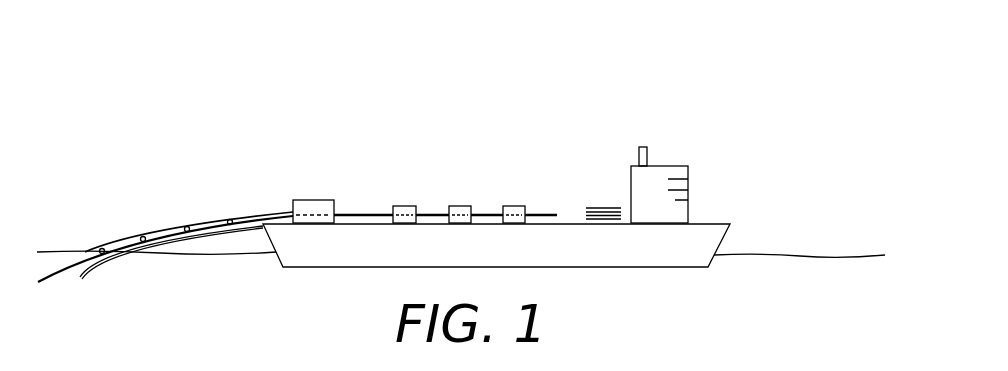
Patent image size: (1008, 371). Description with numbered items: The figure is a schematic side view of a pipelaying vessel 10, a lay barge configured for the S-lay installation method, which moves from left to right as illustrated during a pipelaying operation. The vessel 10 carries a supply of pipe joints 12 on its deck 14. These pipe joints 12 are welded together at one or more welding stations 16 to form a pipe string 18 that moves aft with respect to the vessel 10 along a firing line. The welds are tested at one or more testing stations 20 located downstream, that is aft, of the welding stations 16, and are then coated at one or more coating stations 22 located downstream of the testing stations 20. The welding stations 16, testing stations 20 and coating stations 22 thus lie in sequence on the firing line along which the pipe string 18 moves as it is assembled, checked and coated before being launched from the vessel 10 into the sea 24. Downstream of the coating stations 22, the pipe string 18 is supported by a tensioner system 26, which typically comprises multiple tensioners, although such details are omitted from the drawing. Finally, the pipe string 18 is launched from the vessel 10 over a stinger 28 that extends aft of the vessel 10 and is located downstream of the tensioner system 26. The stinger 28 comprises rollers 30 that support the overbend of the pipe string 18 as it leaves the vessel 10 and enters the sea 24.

The pipelaying vessel 10 is at (461, 167).
The pipe joints 12 is at (602, 206).
The deck 14 is at (567, 222).
The welding stations 16 is at (515, 206).
The pipe string 18 is at (355, 214).
The testing stations 20 is at (459, 206).
The coating stations 22 is at (404, 206).
The sea 24 is at (793, 255).
The tensioner system 26 is at (313, 200).
The stinger 28 is at (165, 230).
The rollers 30 is at (163, 224).